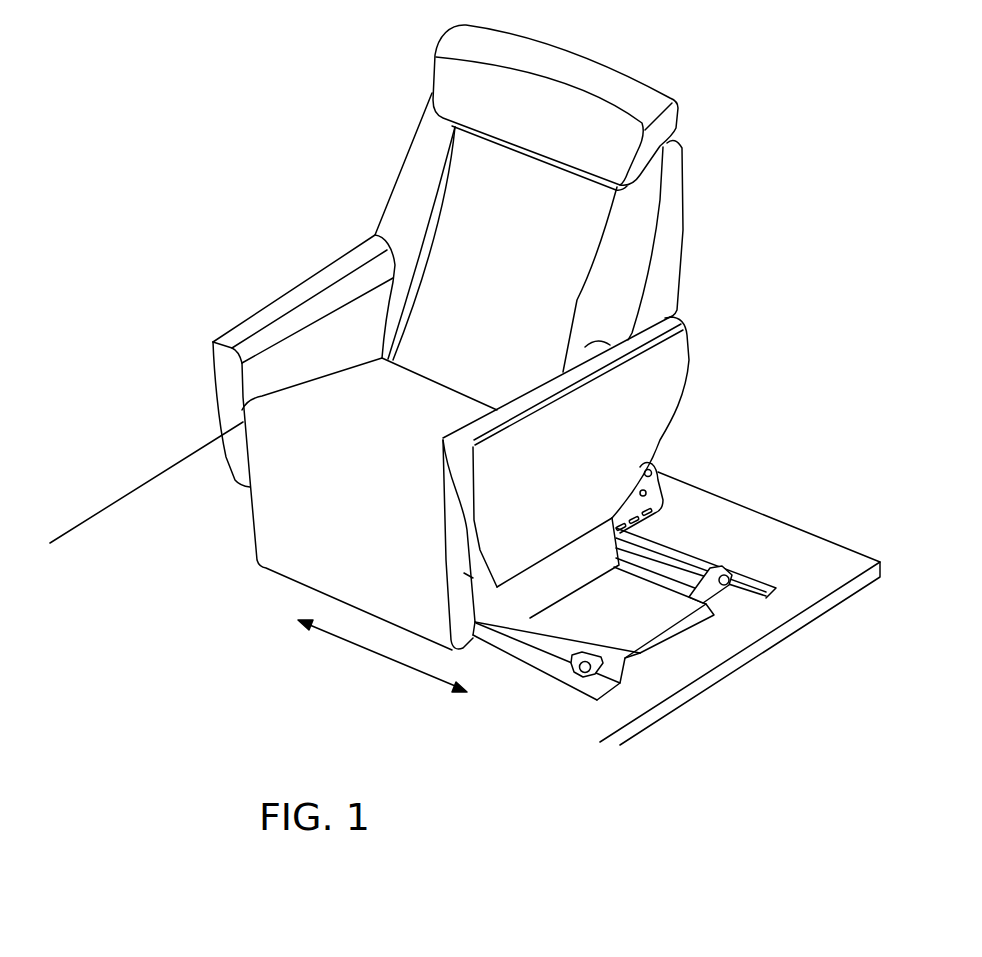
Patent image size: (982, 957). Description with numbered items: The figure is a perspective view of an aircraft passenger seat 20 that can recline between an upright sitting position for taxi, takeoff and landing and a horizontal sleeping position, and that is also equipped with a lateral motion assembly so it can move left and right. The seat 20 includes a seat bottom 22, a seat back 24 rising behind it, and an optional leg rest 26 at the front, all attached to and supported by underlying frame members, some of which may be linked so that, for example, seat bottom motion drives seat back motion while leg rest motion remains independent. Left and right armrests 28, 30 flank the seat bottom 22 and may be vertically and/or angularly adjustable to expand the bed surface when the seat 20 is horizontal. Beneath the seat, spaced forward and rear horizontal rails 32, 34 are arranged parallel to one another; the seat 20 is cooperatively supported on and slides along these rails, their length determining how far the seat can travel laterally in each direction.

The aircraft passenger seat 20 is at (358, 153).
The seat bottom 22 is at (340, 402).
The seat back 24 is at (590, 233).
The leg rest 26 is at (293, 532).
The left armrest 28 is at (657, 368).
The right armrest 30 is at (252, 323).
The forward horizontal rail 32 is at (553, 653).
The rear horizontal rail 34 is at (683, 565).